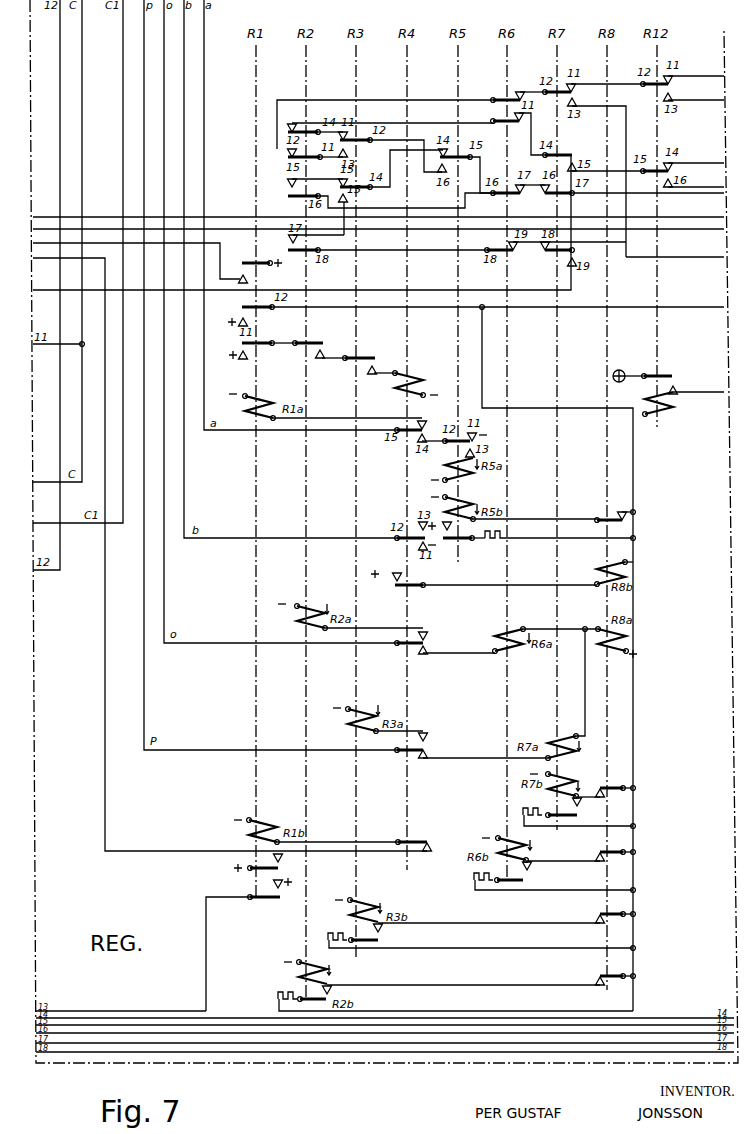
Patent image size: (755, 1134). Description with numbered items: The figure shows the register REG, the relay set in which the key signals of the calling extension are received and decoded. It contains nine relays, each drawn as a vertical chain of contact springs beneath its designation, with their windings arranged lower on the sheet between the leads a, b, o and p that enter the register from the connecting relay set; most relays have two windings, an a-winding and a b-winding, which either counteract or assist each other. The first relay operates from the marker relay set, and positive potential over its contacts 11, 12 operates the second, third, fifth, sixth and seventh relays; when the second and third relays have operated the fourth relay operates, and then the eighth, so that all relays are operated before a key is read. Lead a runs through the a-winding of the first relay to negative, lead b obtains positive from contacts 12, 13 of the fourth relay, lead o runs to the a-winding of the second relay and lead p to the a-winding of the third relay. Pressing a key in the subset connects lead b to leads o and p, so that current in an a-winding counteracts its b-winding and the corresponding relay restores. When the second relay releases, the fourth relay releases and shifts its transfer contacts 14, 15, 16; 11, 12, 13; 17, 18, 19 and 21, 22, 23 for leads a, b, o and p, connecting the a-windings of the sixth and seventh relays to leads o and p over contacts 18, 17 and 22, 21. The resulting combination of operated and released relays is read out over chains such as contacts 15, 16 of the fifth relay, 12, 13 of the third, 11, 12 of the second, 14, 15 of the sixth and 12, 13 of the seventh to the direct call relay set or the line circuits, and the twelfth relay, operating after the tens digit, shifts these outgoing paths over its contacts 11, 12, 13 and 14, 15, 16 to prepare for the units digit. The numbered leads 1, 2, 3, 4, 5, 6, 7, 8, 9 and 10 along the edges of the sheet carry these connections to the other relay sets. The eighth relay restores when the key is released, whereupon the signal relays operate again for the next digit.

The terminal line 1 is at (696, 70).
The terminal line 2 is at (696, 95).
The terminal line 3 is at (696, 158).
The terminal line 4 is at (696, 182).
The terminal line 5 is at (648, 198).
The terminal line 6 is at (378, 212).
The terminal line 7 is at (378, 224).
The terminal line 8 is at (136, 256).
The terminal line 9 is at (230, 549).
The terminal line 10 is at (378, 231).
The relay contact 11 is at (683, 399).
The relay contact 12 is at (502, 127).
The relay contact 13 is at (303, 121).
The relay contact 14 is at (503, 92).
The relay contact 15 is at (523, 88).
The relay contact 16 is at (428, 416).
The relay contact 17 is at (429, 656).
The relay contact 18 is at (405, 650).
The relay contact 19 is at (426, 626).
The relay contact 21 is at (426, 761).
The relay contact 22 is at (405, 757).
The relay contact 23 is at (426, 729).